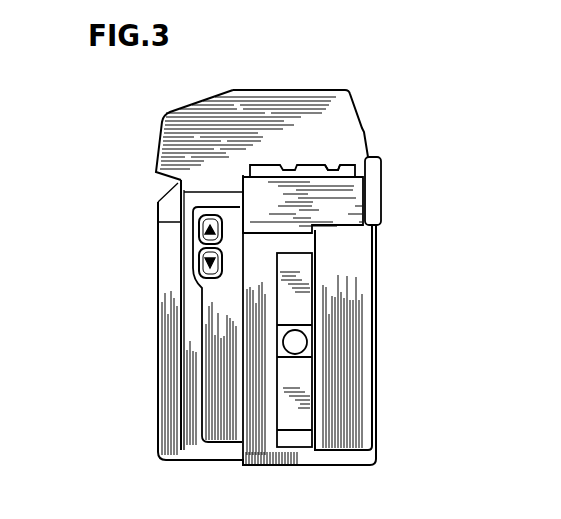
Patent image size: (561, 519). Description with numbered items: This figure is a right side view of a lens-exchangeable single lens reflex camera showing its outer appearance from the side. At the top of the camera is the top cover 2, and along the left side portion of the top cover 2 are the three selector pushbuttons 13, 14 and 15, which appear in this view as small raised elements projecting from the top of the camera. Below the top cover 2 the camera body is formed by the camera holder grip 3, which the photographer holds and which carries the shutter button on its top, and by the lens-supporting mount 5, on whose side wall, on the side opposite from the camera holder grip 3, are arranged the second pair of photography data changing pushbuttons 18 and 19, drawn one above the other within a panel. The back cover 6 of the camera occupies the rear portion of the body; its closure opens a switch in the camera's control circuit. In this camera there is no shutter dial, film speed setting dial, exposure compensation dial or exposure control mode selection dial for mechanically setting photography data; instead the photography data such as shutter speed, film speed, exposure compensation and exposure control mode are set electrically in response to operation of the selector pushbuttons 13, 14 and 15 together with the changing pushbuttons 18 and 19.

The top cover 2 is at (360, 118).
The camera holder grip 3 is at (163, 437).
The lens-supporting mount 5 is at (205, 445).
The back cover 6 is at (355, 331).
The selector pushbutton 13 is at (297, 138).
The selector pushbutton 14 is at (285, 163).
The selector pushbutton 15 is at (340, 163).
The photography data changing pushbutton 18 is at (197, 233).
The photography data changing pushbutton 19 is at (197, 275).